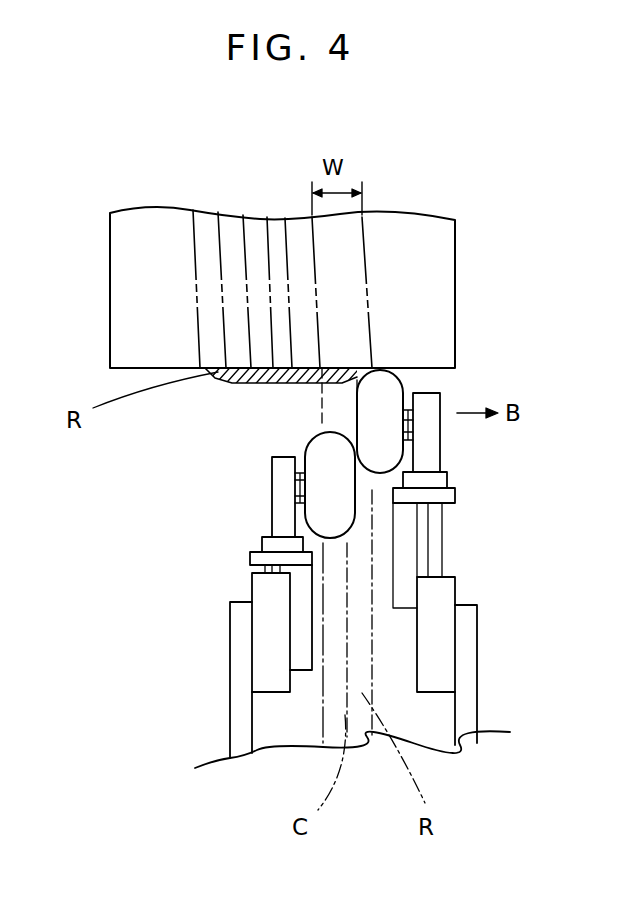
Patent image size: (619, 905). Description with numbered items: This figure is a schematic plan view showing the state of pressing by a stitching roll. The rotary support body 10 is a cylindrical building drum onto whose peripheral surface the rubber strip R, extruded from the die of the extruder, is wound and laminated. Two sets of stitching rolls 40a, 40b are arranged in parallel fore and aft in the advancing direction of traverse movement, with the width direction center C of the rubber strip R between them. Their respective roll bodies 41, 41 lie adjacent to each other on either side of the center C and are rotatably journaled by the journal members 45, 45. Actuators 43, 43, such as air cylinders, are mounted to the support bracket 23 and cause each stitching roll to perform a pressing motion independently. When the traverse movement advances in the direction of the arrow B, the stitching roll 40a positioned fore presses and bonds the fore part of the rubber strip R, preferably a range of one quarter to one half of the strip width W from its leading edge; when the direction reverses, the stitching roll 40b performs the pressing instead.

The rotary support body 10 is at (432, 270).
The roll body 41 is at (318, 447).
The stitching roll 40a is at (390, 447).
The stitching roll 40b is at (312, 485).
The journal member 45 is at (278, 518).
The actuator 43 is at (268, 625).
The support bracket 23 is at (238, 715).